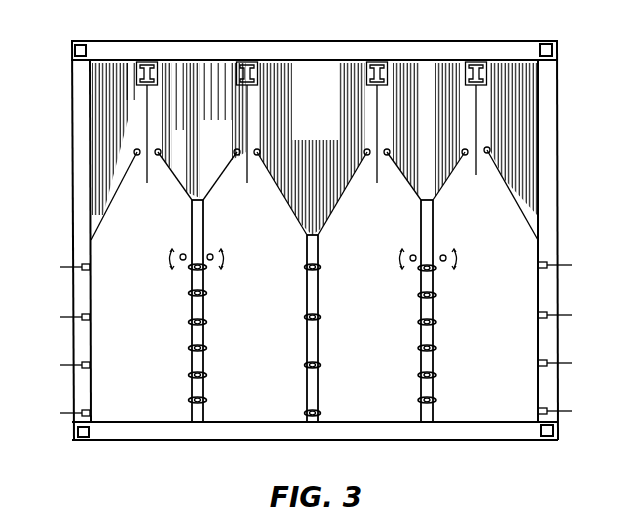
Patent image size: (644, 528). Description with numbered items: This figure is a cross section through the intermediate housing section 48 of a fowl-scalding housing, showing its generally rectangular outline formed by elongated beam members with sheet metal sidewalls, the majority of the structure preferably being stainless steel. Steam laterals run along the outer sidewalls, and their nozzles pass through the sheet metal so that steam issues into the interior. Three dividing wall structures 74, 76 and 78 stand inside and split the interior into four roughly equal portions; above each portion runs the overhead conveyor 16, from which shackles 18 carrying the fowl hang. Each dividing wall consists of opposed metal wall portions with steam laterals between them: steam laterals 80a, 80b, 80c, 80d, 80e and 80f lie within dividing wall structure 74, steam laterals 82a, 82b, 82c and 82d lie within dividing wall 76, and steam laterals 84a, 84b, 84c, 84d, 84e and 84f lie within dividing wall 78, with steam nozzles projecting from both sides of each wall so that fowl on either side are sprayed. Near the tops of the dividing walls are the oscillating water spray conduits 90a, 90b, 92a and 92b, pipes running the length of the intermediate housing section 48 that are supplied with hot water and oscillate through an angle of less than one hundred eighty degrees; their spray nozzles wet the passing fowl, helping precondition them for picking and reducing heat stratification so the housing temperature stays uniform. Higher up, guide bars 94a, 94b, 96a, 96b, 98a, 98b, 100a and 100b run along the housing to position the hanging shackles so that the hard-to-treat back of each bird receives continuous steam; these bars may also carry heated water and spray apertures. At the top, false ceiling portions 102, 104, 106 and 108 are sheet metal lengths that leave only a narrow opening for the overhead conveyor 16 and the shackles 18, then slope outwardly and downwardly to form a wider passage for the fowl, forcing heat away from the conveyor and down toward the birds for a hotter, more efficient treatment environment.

The overhead conveyor 16 is at (150, 55).
The shackles 18 is at (147, 103).
The intermediate housing section 48 is at (325, 31).
The dividing wall structure 74 is at (198, 423).
The dividing wall structure 76 is at (310, 423).
The dividing wall structure 78 is at (428, 423).
The steam lateral 80a is at (204, 270).
The steam lateral 80b is at (204, 295).
The steam lateral 80c is at (204, 322).
The steam lateral 80d is at (204, 350).
The steam lateral 80e is at (204, 377).
The steam lateral 80f is at (204, 402).
The steam lateral 82a is at (318, 269).
The steam lateral 82b is at (318, 318).
The steam lateral 82c is at (318, 365).
The steam lateral 82d is at (318, 412).
The steam lateral 84a is at (422, 270).
The steam lateral 84b is at (422, 296).
The steam lateral 84c is at (422, 322).
The steam lateral 84d is at (422, 348).
The steam lateral 84e is at (422, 375).
The steam lateral 84f is at (422, 400).
The oscillating water spray conduit 90a is at (184, 251).
The oscillating water spray conduit 90b is at (210, 251).
The oscillating water spray conduit 92a is at (414, 252).
The oscillating water spray conduit 92b is at (443, 252).
The guide bar 94a is at (139, 148).
The guide bar 94b is at (158, 156).
The guide bar 96a is at (237, 156).
The guide bar 96b is at (257, 148).
The guide bar 98a is at (367, 148).
The guide bar 98b is at (387, 156).
The guide bar 100a is at (465, 156).
The guide bar 100b is at (487, 146).
The false ceiling portion 102 is at (187, 199).
The false ceiling portion 104 is at (207, 202).
The false ceiling portion 106 is at (420, 200).
The false ceiling portion 108 is at (437, 200).